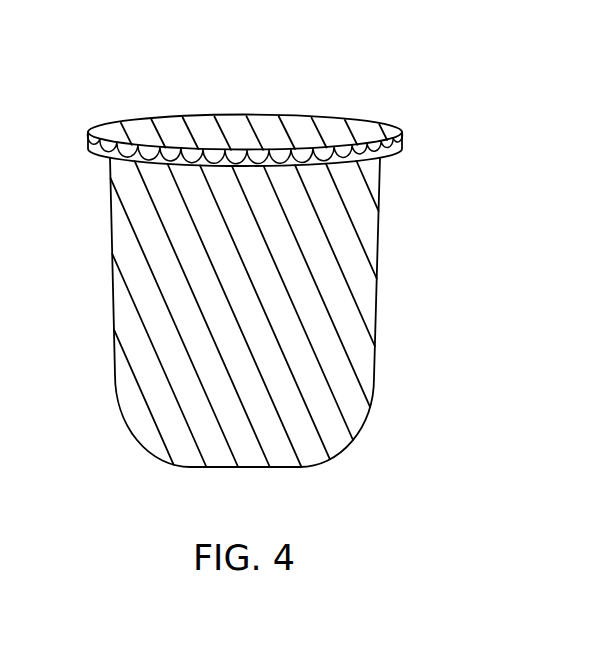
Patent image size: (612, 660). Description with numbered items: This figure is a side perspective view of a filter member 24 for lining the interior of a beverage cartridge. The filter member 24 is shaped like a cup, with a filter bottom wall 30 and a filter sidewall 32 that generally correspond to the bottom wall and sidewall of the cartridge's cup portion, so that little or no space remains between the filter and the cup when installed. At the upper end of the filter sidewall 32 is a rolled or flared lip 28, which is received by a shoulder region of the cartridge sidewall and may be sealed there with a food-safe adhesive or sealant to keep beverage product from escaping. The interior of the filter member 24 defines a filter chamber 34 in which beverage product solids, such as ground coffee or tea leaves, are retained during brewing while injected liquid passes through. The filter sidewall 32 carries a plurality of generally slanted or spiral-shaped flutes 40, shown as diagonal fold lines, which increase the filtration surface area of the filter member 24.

The filter member 24 is at (458, 58).
The flared lip 28 is at (93, 132).
The filter bottom wall 30 is at (248, 470).
The filter sidewall 32 is at (112, 293).
The filter chamber 34 is at (245, 125).
The flutes 40 is at (343, 270).